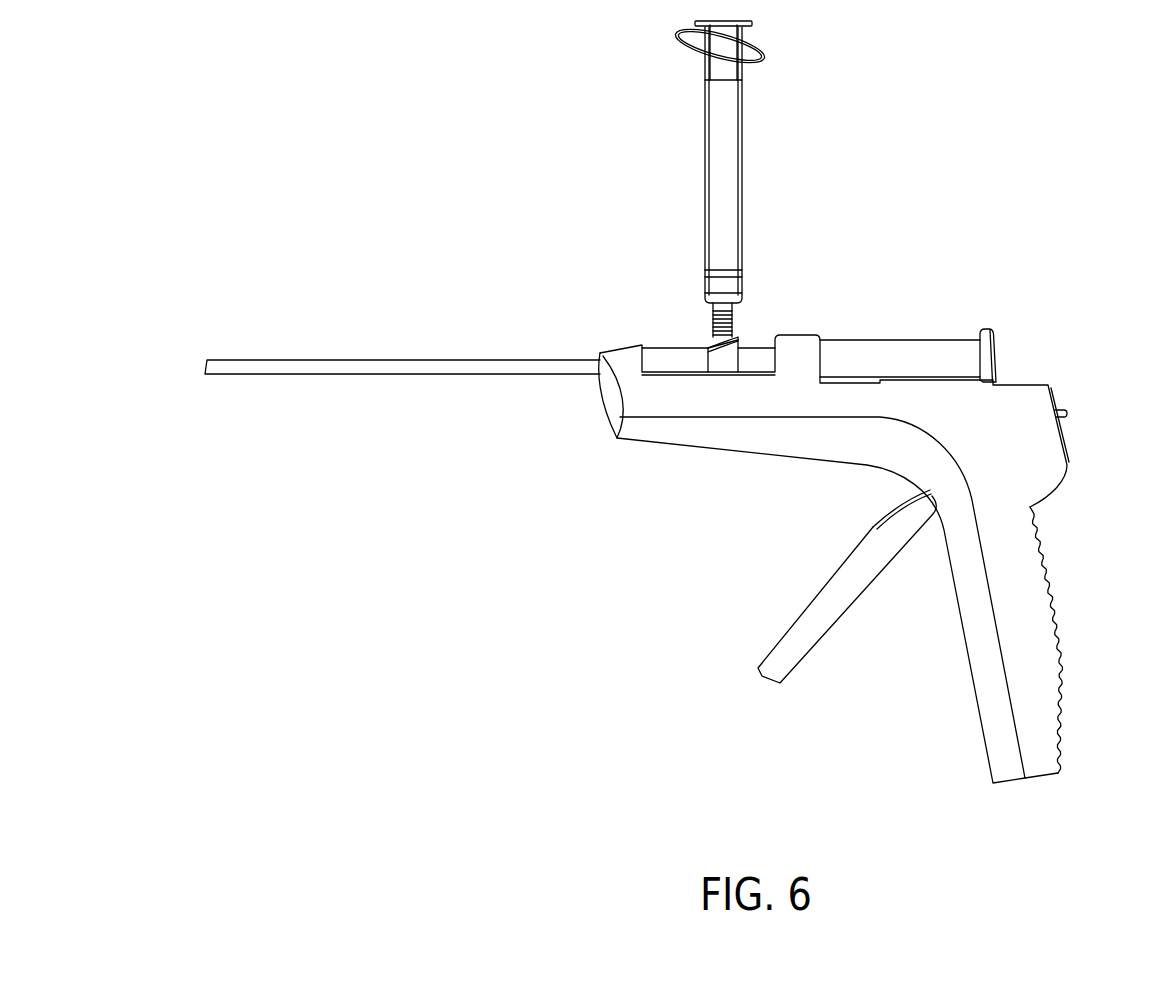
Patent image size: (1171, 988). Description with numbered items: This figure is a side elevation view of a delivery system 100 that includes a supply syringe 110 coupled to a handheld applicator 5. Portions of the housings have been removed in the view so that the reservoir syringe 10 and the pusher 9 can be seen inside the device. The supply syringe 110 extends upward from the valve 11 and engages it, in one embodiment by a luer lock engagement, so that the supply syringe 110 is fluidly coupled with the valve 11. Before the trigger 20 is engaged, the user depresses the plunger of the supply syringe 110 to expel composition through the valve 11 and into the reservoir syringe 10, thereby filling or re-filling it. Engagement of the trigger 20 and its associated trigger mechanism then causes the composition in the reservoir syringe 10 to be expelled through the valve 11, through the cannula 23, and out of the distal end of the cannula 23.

The delivery system 100 is at (428, 130).
The applicator device 5 is at (1092, 371).
The pusher 9 is at (993, 358).
The reservoir syringe 10 is at (863, 350).
The valve 11 is at (710, 342).
The trigger 20 is at (807, 615).
The cannula 23 is at (447, 360).
The supply syringe 110 is at (708, 137).